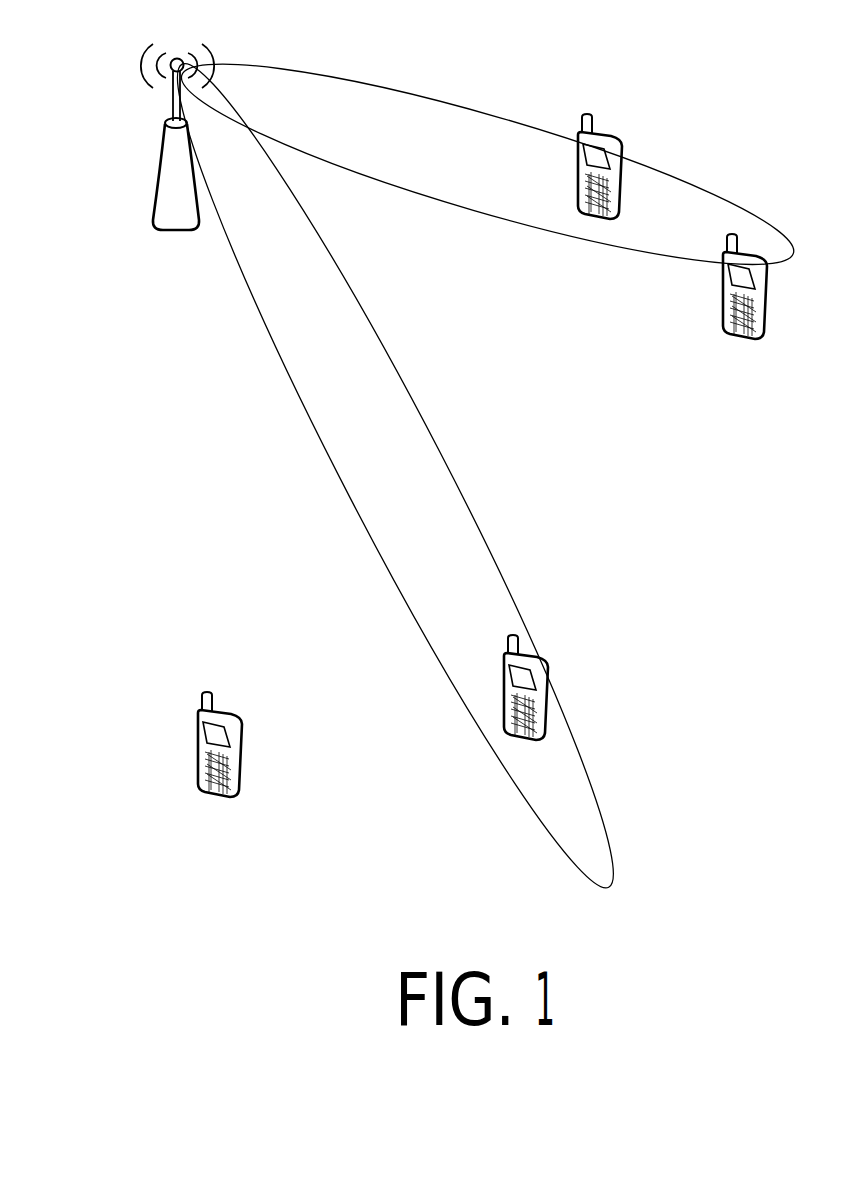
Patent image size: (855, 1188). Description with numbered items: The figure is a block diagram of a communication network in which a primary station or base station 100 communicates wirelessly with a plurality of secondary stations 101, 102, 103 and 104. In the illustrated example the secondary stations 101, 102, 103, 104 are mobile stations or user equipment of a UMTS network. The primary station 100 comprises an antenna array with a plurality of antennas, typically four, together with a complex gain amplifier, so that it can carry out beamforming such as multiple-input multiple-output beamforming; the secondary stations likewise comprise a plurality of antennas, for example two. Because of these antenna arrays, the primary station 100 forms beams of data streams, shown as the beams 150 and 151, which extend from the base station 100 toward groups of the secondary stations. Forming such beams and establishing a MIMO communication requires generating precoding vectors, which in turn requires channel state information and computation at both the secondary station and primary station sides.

The primary station 100 is at (157, 165).
The secondary station 101 is at (626, 150).
The secondary station 102 is at (736, 340).
The secondary station 103 is at (549, 677).
The secondary station 104 is at (212, 800).
The beam 150 is at (330, 465).
The beam 151 is at (480, 112).